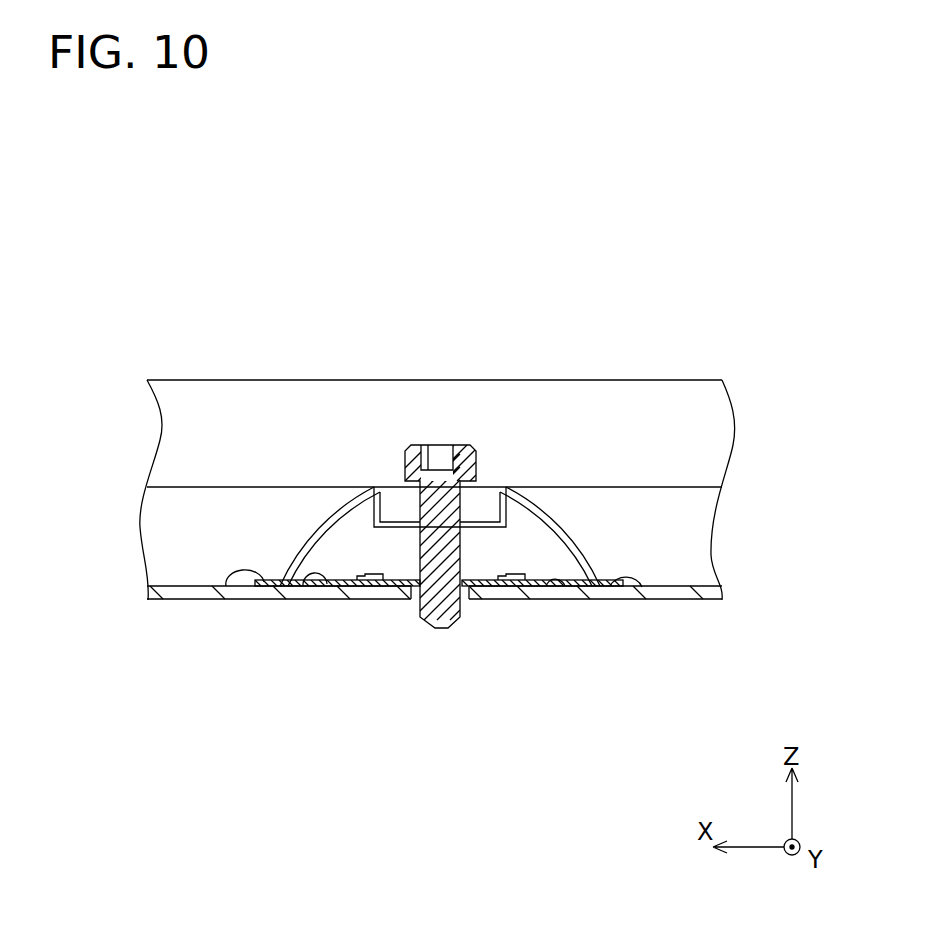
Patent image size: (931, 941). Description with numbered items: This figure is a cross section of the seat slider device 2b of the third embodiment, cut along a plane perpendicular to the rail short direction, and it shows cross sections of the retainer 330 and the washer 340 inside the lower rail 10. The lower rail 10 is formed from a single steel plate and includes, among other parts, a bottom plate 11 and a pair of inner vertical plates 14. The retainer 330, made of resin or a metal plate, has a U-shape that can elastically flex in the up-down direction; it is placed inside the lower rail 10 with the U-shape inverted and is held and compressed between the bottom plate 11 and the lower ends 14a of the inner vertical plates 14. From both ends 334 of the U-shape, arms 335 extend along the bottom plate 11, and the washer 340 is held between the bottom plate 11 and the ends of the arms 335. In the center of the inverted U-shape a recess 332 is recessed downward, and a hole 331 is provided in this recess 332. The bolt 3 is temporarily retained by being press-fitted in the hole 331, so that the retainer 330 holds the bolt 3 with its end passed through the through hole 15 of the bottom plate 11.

The seat slider device 2b is at (137, 255).
The lower rail 10 is at (740, 376).
The inner vertical plate 14 is at (728, 437).
The lower end of inner vertical plate 14a is at (677, 488).
The bottom plate 11 is at (677, 599).
The through hole 15 is at (418, 600).
The bolt 3 is at (450, 627).
The retainer 330 is at (333, 503).
The hole 331 is at (420, 533).
The recess 332 is at (495, 505).
The end of retainer 334 is at (225, 583).
The arm 335 is at (299, 580).
The washer 340 is at (487, 586).